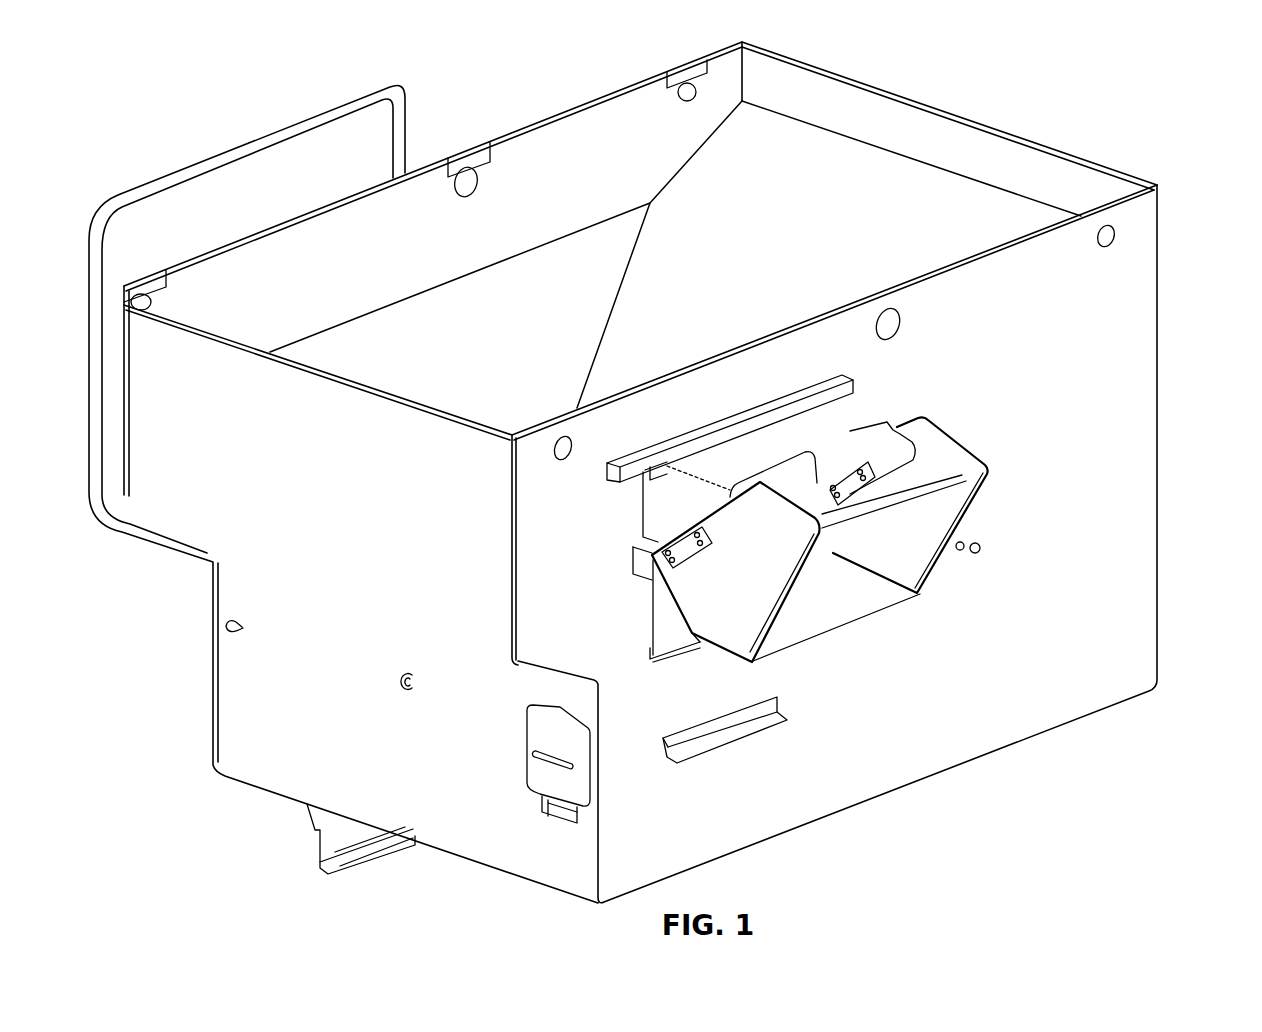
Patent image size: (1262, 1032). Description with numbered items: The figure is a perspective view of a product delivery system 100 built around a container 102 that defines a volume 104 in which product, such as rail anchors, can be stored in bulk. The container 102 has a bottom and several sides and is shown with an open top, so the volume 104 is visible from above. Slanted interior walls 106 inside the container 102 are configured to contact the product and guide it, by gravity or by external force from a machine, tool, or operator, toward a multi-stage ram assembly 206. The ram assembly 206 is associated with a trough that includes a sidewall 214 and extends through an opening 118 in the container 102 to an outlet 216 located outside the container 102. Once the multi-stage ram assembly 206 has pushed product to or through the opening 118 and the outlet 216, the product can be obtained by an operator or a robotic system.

The product delivery system 100 is at (1198, 154).
The container 102 is at (1020, 372).
The volume 104 is at (645, 324).
The slanted interior walls 106 is at (640, 237).
The opening 118 is at (791, 484).
The multi-stage ram assembly 206 is at (898, 652).
The sidewall 214 is at (663, 608).
The outlet 216 is at (877, 512).